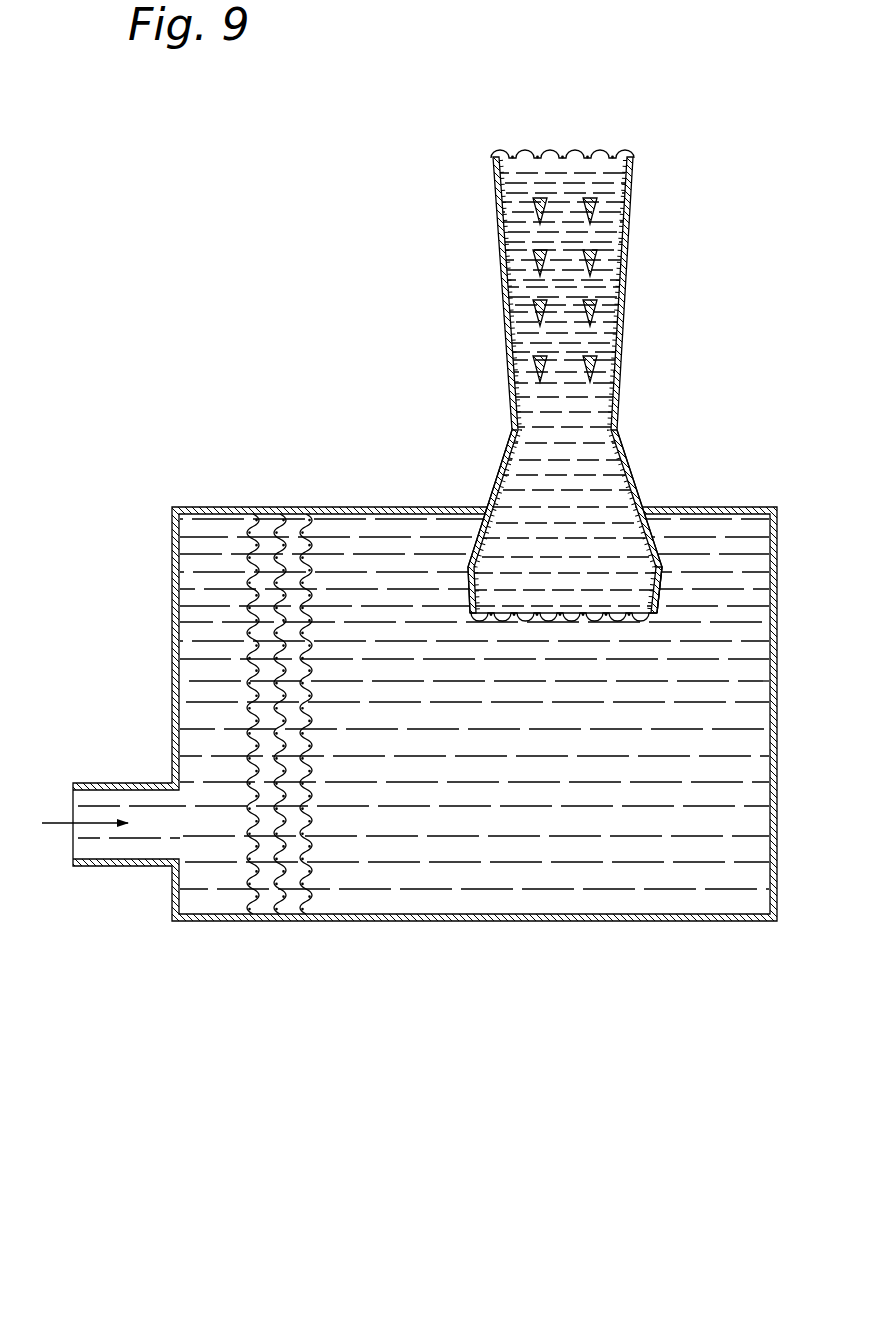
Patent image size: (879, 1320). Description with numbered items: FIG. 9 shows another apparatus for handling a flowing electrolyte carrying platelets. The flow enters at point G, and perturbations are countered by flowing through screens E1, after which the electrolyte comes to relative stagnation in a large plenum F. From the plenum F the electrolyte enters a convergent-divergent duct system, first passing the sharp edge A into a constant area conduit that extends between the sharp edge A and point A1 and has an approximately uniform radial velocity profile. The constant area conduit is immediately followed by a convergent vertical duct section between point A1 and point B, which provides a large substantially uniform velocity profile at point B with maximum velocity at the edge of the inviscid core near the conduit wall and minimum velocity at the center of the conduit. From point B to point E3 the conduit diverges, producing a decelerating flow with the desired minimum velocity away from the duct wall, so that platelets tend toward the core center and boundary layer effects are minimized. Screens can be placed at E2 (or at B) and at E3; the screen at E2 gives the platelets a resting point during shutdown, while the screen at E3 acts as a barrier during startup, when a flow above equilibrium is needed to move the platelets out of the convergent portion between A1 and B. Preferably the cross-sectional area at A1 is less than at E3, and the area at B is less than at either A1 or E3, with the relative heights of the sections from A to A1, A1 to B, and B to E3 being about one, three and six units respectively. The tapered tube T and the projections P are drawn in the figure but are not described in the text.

The large plenum F is at (537, 700).
The point G is at (143, 843).
The screens E1 is at (304, 520).
The tapered tube T is at (500, 296).
The projections in tube P is at (618, 263).
The point B is at (620, 430).
The point A1 is at (663, 568).
The point E3 is at (634, 157).
The point E2 is at (492, 607).
The sharp edge A is at (469, 613).